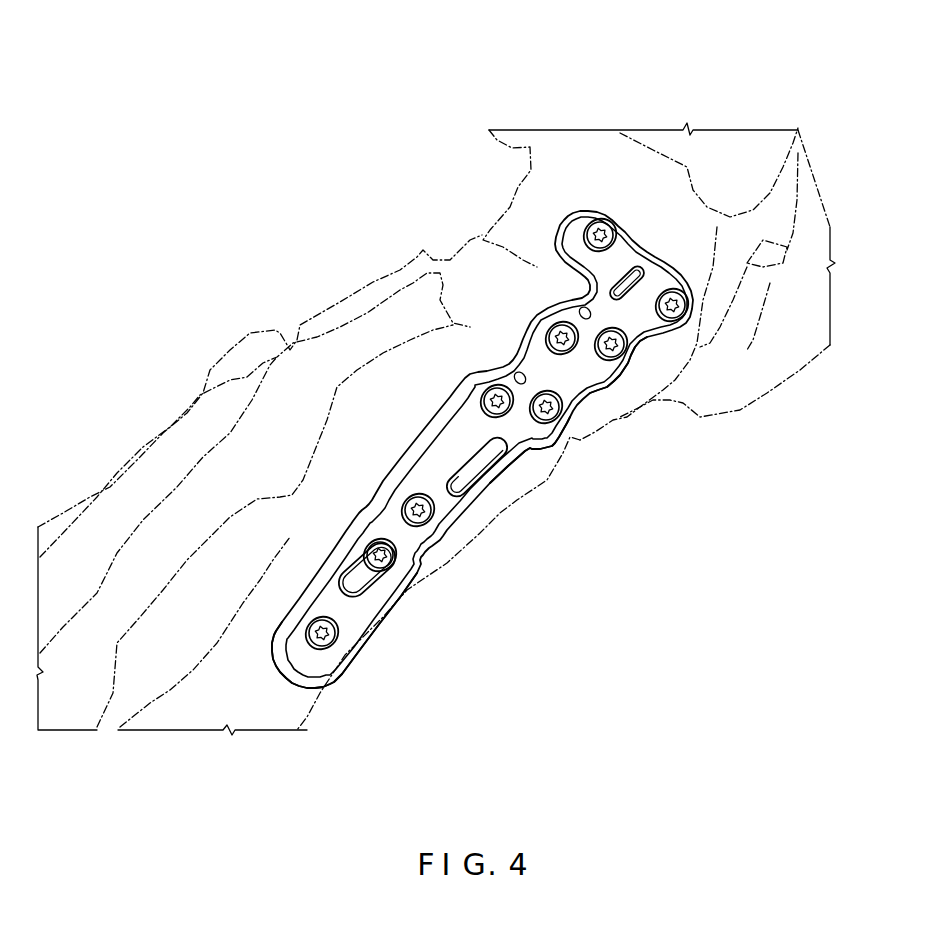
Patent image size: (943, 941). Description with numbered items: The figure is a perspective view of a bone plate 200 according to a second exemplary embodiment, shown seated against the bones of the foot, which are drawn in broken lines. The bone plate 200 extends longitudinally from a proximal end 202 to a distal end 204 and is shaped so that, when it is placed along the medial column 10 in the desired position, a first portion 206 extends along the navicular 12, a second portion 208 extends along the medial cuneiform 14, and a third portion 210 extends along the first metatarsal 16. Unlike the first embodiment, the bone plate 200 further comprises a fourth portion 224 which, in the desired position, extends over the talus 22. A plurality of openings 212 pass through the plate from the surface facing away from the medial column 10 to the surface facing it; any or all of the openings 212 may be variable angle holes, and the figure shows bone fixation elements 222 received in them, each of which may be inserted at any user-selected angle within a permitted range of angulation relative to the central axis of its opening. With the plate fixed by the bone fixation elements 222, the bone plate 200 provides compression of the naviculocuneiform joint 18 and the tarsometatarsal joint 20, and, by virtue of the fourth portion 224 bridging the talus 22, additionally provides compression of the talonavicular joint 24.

The medial column 10 is at (566, 506).
The navicular 12 is at (613, 420).
The medial cuneiform 14 is at (500, 513).
The first metatarsal 16 is at (422, 572).
The naviculocuneiform joint 18 is at (577, 438).
The tarsometatarsal joint 20 is at (480, 590).
The talus 22 is at (538, 228).
The talonavicular joint 24 is at (540, 279).
The bone plate 200 is at (426, 354).
The proximal end 202 is at (640, 250).
The distal end 204 is at (305, 675).
The first portion 206 is at (622, 378).
The second portion 208 is at (542, 438).
The third portion 210 is at (375, 620).
The openings 212 is at (543, 393).
The bone fixation elements 222 is at (407, 507).
The fourth portion 224 is at (577, 230).